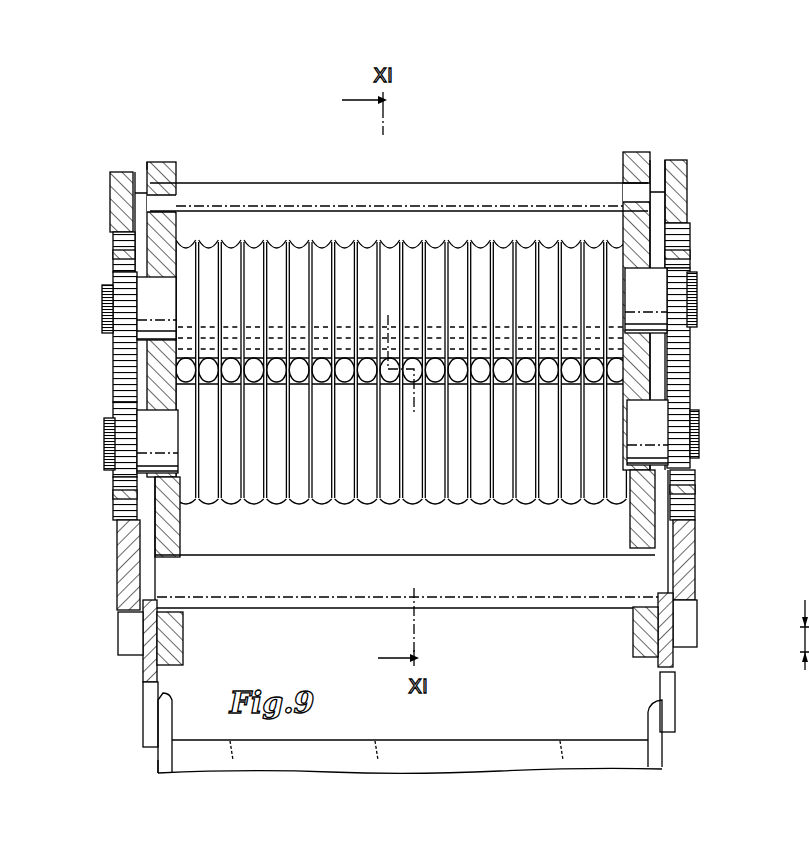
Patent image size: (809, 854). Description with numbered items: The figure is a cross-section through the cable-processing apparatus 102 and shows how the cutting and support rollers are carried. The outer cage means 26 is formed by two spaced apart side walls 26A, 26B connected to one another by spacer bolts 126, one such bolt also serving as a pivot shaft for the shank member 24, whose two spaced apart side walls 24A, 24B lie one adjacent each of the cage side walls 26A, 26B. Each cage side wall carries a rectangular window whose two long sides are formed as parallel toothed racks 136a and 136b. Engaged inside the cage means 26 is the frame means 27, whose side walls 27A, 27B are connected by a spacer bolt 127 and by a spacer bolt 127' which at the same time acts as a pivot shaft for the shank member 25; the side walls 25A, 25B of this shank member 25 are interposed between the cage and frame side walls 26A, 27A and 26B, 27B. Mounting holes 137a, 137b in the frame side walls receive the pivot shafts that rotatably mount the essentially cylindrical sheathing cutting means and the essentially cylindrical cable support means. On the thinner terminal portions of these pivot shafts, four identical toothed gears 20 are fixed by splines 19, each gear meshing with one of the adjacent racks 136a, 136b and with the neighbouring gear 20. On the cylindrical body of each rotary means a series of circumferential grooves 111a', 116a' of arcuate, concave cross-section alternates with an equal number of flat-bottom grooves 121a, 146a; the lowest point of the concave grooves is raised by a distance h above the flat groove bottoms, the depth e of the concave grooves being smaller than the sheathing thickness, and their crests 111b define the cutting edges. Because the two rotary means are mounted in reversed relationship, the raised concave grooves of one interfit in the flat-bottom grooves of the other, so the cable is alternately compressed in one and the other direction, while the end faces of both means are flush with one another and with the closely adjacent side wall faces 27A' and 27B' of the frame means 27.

The apparatus 102 is at (296, 113).
The side wall 27B is at (147, 324).
The side wall face 27B' is at (192, 174).
The spacer bolts 126 is at (136, 192).
The mounting hole 137a is at (184, 278).
The spacer bolt 127 is at (399, 183).
The circumferential grooves 111a' is at (315, 330).
The crests 111b is at (376, 240).
The grooves 121a is at (462, 243).
The side wall face 27A' is at (600, 127).
The frame means 27 is at (637, 145).
The side wall 27A is at (685, 129).
The cage means 26 is at (692, 168).
The side wall 26B is at (115, 180).
The side wall 26A is at (690, 184).
The toothed rack 136a is at (120, 226).
The splines 19 is at (105, 322).
The toothed gears 20 is at (115, 393).
The toothed rack 136b is at (120, 523).
The mounting hole 137b is at (186, 456).
The circumferential grooves 116a' is at (357, 386).
The grooves 146a is at (413, 498).
The side wall 25A is at (150, 622).
The side wall 25B is at (666, 612).
The spacer bolt 127' is at (415, 623).
The shank member 24 is at (168, 708).
The shank member 25 is at (148, 715).
The side wall 24A is at (661, 750).
The side wall 24B is at (164, 762).
The distance h is at (803, 619).
The depth e is at (804, 640).